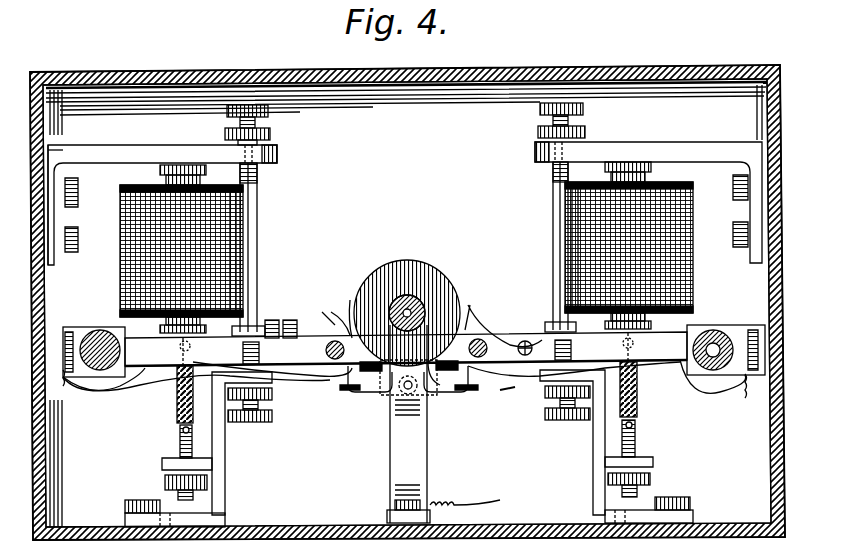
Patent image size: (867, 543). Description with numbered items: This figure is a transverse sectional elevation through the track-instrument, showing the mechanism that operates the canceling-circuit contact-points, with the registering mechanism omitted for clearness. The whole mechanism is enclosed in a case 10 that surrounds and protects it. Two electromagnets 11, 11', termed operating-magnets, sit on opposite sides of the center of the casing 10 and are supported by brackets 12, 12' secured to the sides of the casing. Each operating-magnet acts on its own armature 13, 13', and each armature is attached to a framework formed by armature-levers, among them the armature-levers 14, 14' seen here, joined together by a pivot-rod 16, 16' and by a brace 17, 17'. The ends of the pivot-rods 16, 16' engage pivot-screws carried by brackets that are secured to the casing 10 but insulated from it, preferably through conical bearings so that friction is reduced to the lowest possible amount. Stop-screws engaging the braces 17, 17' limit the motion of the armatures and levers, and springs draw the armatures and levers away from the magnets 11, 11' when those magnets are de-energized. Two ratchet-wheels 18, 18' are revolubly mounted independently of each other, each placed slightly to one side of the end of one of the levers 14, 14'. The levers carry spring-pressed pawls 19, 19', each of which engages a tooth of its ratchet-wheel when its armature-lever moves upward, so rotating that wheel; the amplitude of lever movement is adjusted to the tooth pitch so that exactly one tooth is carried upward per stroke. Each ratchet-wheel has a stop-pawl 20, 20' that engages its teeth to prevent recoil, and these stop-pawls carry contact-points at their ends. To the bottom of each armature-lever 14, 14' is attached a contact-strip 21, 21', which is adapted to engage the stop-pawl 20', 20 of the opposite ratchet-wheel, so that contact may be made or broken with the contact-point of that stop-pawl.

The case 10 is at (780, 226).
The electromagnet 11 is at (629, 245).
The electromagnet 11' is at (181, 249).
The bracket 12 is at (648, 189).
The bracket 12' is at (162, 192).
The armature 13 is at (617, 335).
The armature 13' is at (231, 350).
The armature-lever 14 is at (646, 395).
The armature-lever 14' is at (163, 397).
The pivot-rod 16 is at (722, 374).
The pivot-rod 16' is at (104, 370).
The brace 17 is at (406, 340).
The brace 17' is at (283, 326).
The ratchet-wheel 18 is at (415, 302).
The ratchet-wheel 18' is at (397, 310).
The pawl 19 is at (503, 325).
The pawl 19' is at (332, 325).
The stop-pawl 20 is at (398, 424).
The stop-pawl 20' is at (447, 390).
The contact-strip 21 is at (458, 387).
The contact-strip 21' is at (365, 392).